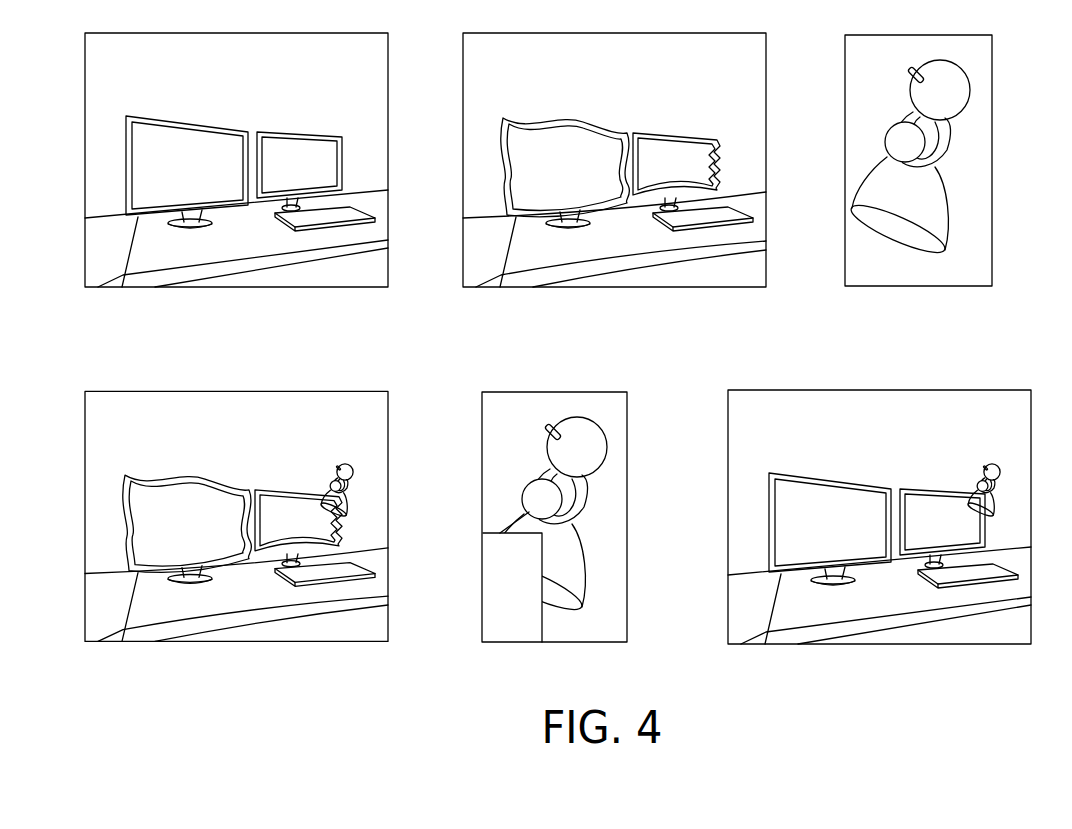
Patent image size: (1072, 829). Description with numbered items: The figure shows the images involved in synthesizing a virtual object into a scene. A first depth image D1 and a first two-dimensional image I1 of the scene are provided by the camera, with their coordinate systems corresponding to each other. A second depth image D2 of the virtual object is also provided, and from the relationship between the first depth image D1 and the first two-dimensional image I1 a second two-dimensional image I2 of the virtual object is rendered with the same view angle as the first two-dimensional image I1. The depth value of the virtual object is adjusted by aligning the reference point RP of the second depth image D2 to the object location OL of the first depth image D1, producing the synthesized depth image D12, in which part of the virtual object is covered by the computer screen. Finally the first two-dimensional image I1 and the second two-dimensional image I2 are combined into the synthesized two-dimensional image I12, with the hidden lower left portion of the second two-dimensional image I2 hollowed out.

The object location OL is at (722, 157).
The reference point RP is at (905, 177).
The first two-dimensional image I1 is at (236, 177).
The first depth image D1 is at (637, 177).
The second depth image D2 is at (947, 178).
The synthesized depth image D12 is at (236, 534).
The second two-dimensional image I2 is at (554, 535).
The synthesized two-dimensional image I12 is at (879, 534).